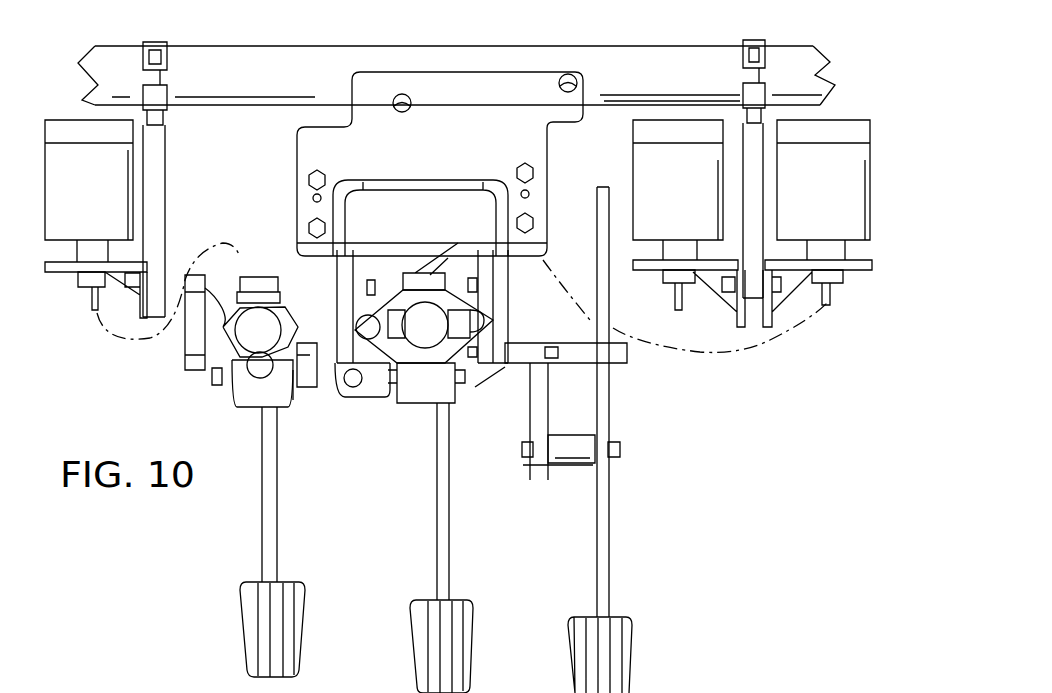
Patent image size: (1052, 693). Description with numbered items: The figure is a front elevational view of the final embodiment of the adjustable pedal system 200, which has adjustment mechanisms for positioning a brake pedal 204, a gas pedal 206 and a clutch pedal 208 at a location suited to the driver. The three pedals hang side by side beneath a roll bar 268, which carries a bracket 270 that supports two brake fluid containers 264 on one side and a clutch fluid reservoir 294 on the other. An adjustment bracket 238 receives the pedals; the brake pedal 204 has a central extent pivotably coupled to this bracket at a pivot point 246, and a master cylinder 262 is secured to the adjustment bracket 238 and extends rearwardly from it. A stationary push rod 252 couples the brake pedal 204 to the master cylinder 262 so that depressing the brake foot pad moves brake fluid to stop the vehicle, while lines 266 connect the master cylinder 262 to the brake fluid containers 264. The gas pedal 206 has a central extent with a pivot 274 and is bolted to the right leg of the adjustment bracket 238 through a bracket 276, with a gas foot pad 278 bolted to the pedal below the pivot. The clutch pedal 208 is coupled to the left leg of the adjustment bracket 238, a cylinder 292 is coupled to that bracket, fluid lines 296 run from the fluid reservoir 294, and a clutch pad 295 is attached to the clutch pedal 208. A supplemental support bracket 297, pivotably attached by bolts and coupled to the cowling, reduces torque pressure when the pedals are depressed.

The adjustable pedal system 200 is at (690, 445).
The brake pedal 204 is at (437, 487).
The gas pedal 206 is at (610, 520).
The clutch pedal 208 is at (262, 478).
The adjustment bracket 238 is at (230, 395).
The pivot point 246 is at (475, 387).
The stationary push rod 252 is at (470, 606).
The master cylinder 262 is at (423, 337).
The brake fluid containers 264 is at (704, 196).
The lines 266 is at (668, 317).
The roll bar 268 is at (370, 40).
The bracket 270 is at (165, 202).
The pivot 274 is at (610, 457).
The bracket 276 is at (533, 465).
The gas foot pad 278 is at (622, 633).
The cylinder 292 is at (297, 393).
The fluid reservoir 294 is at (112, 196).
The clutch pad 295 is at (242, 592).
The fluid lines 296 is at (150, 333).
The supplemental support bracket 297 is at (492, 136).